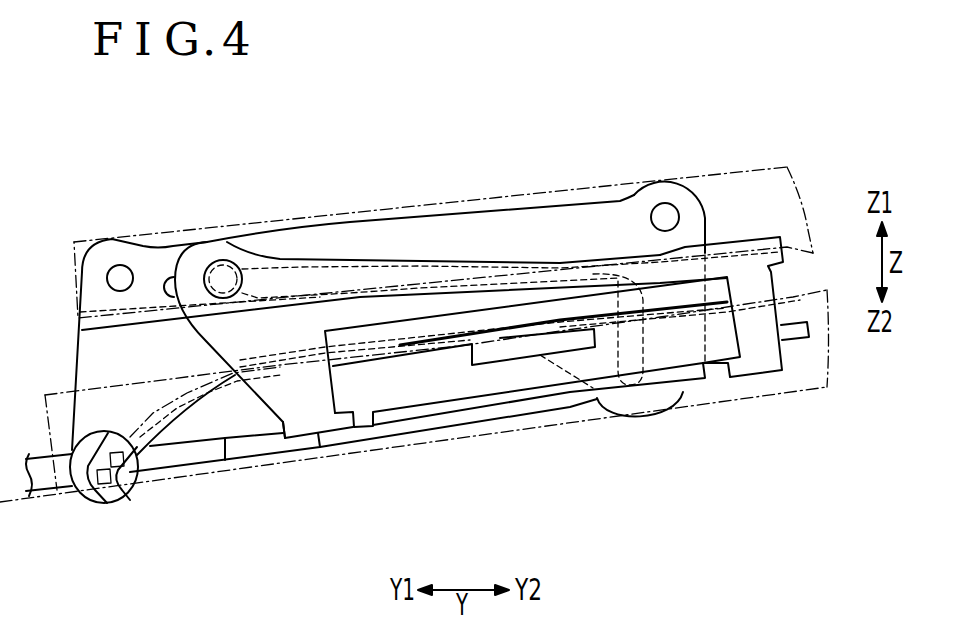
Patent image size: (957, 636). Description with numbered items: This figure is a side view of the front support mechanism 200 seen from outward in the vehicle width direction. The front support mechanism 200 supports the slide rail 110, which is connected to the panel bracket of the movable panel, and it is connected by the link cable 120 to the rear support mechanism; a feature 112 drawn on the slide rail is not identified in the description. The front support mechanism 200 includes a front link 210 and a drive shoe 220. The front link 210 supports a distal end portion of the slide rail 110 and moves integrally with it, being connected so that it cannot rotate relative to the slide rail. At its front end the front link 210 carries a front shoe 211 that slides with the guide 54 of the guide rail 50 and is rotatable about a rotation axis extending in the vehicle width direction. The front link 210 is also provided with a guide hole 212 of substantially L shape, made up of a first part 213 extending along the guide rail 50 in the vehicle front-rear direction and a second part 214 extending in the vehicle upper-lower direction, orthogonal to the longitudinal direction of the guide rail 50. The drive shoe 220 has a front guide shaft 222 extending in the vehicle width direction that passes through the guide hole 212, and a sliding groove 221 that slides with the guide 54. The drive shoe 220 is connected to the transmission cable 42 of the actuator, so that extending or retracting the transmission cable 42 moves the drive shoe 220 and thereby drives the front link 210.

The transmission cable 42 is at (47, 497).
The guide rail 50 is at (773, 400).
The guide 54 is at (193, 397).
The slide rail 110 is at (787, 167).
The rail edge portion 112 is at (93, 329).
The link cable 120 is at (793, 340).
The front support mechanism 200 is at (422, 324).
The front link 210 is at (707, 213).
The front shoe 211 is at (92, 498).
The guide hole 212 is at (313, 268).
The first part 213 is at (431, 233).
The second part 214 is at (630, 415).
The drive shoe 220 is at (258, 408).
The sliding groove 221 is at (398, 349).
The front guide shaft 222 is at (223, 260).